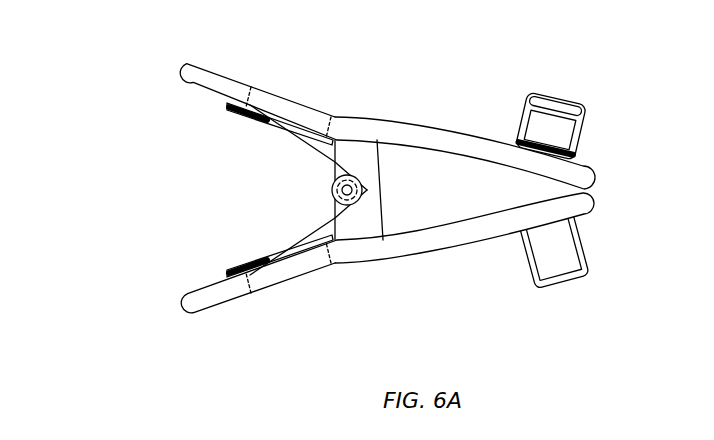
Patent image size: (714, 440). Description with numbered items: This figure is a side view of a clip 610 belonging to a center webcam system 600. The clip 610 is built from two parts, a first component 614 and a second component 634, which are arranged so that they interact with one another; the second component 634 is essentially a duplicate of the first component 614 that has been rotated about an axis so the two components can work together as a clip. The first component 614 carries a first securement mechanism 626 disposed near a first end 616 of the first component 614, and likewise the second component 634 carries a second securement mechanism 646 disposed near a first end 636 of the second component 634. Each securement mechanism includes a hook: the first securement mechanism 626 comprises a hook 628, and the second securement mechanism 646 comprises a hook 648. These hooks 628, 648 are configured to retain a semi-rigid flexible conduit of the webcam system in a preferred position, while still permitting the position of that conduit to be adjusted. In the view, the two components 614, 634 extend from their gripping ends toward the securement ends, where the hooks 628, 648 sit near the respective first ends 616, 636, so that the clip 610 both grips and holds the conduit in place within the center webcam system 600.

The center webcam system 600 is at (100, 72).
The clip 610 is at (146, 153).
The first component 614 is at (382, 119).
The second component 634 is at (393, 262).
The first end of the first component 616 is at (596, 178).
The first end of the second component 636 is at (596, 200).
The first securement mechanism 626 is at (564, 92).
The hook 628 is at (586, 134).
The second securement mechanism 646 is at (569, 286).
The hook 648 is at (585, 252).